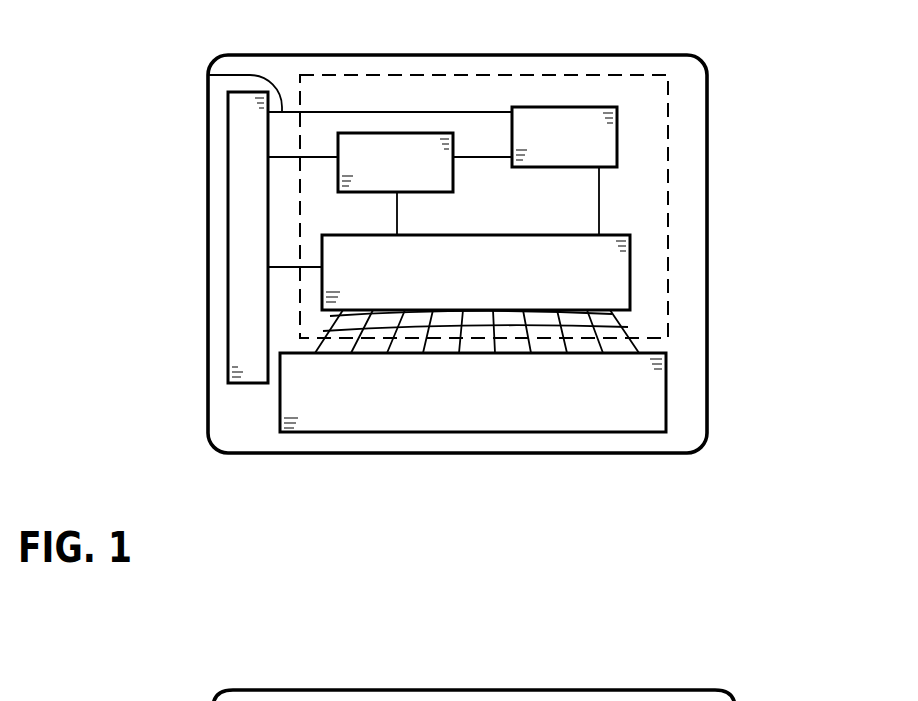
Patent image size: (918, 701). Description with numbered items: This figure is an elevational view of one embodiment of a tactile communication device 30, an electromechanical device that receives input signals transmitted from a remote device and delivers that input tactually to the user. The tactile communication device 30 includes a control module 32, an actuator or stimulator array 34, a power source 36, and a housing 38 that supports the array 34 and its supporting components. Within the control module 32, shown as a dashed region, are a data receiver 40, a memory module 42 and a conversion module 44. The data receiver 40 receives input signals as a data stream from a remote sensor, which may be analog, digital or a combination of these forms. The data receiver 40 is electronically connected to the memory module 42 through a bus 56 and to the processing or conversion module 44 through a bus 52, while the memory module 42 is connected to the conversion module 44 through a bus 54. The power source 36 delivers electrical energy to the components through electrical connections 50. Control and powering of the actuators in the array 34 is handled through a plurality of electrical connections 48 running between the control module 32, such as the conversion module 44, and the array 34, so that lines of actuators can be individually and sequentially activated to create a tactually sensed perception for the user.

The tactile communication device 30 is at (156, 39).
The control module 32 is at (300, 76).
The actuator or stimulator array 34 is at (666, 400).
The power source 36 is at (228, 230).
The housing 38 is at (708, 93).
The data receiver 40 is at (454, 185).
The memory module 42 is at (617, 140).
The conversion module 44 is at (508, 235).
The electrical connections 48 is at (628, 327).
The electrical connections 50 is at (208, 76).
The bus 52 is at (397, 218).
The bus 54 is at (599, 195).
The bus 56 is at (486, 157).